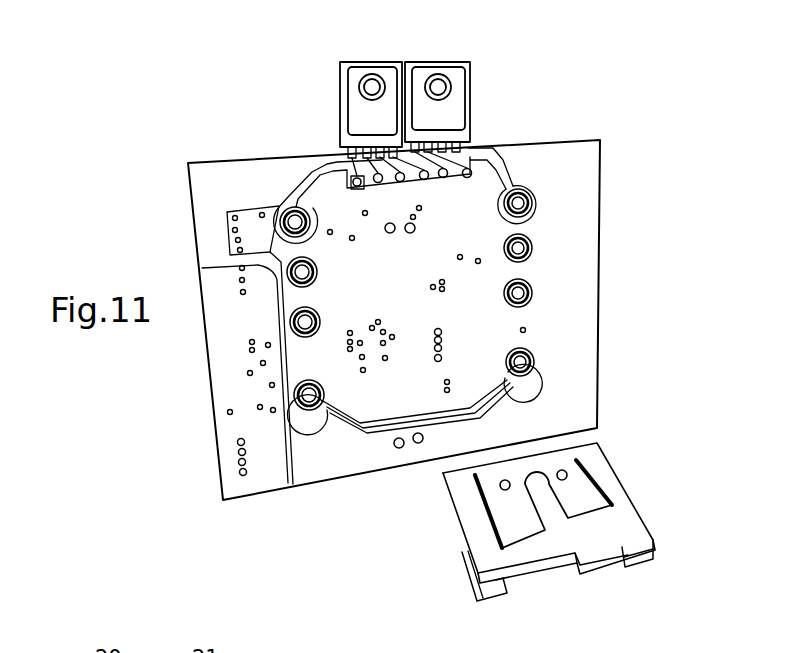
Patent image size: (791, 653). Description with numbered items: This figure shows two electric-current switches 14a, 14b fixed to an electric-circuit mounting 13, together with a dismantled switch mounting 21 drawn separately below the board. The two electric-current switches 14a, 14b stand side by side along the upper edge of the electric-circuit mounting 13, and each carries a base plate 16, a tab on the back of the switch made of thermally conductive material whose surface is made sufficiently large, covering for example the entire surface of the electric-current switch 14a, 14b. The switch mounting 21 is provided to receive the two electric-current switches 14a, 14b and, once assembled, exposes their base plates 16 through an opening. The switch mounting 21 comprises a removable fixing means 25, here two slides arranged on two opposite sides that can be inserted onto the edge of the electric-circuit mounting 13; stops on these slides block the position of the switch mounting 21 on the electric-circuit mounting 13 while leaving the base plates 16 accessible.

The electric-circuit mounting 13 is at (573, 267).
The electric-current switch 14a is at (315, 93).
The electric-current switch 14b is at (480, 93).
The base plate 16 is at (358, 107).
The switch mounting 21 is at (622, 458).
The removable fixing means 25 is at (490, 597).